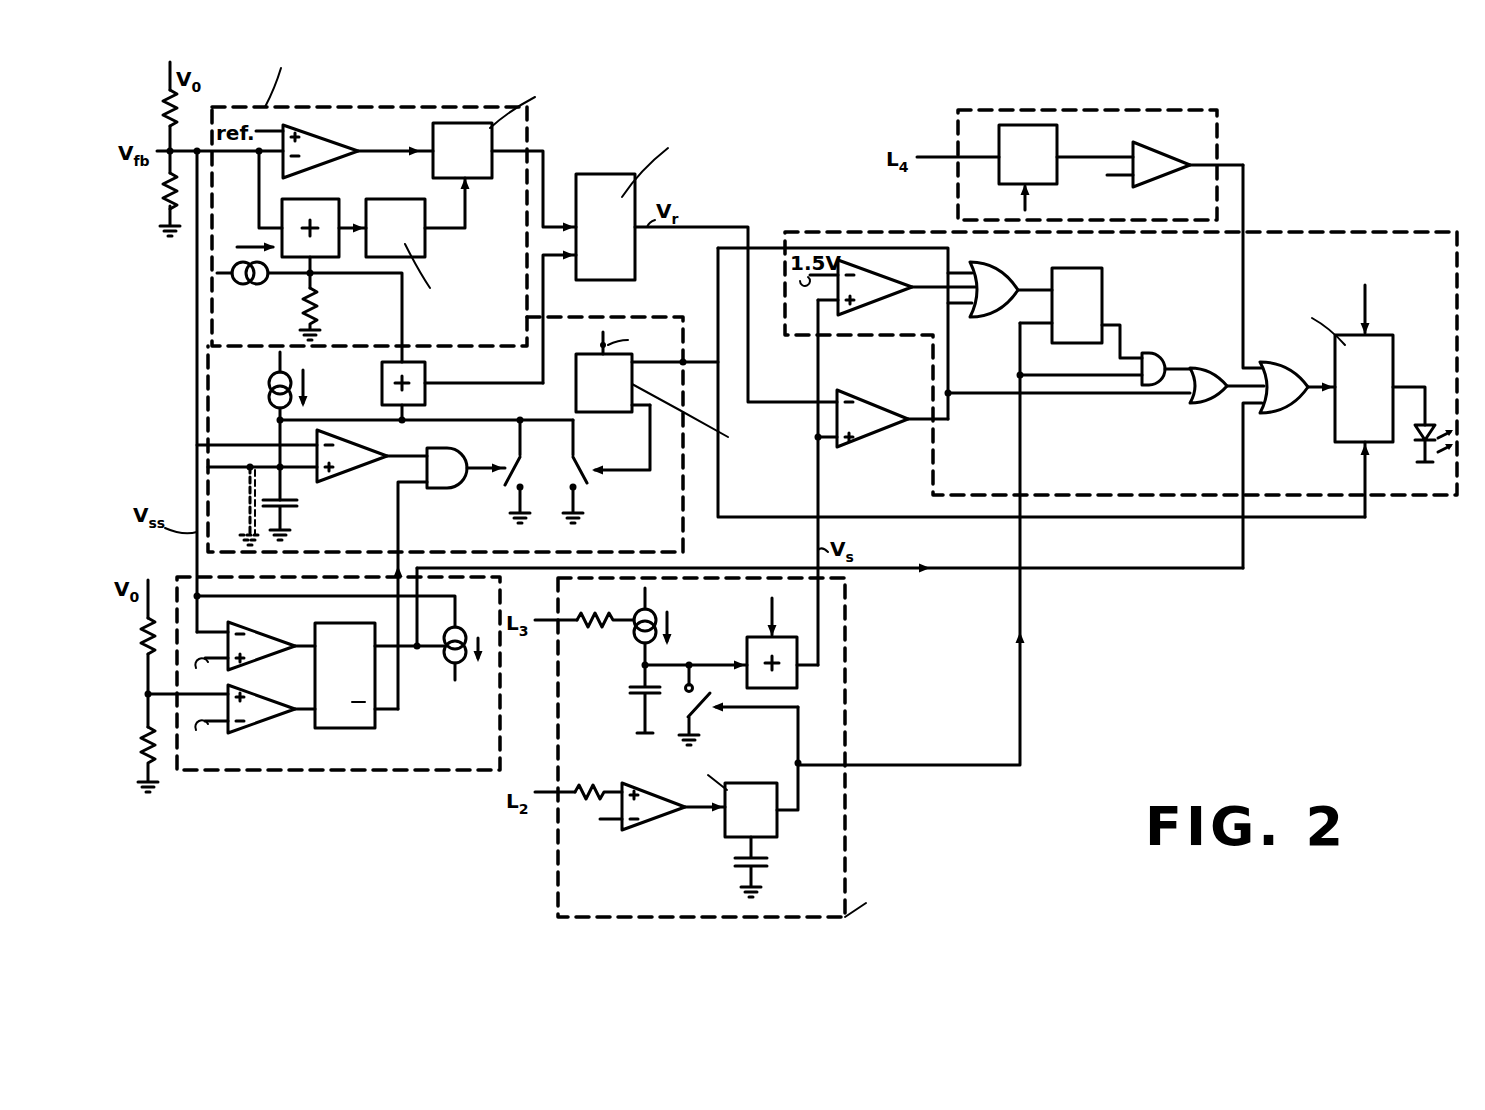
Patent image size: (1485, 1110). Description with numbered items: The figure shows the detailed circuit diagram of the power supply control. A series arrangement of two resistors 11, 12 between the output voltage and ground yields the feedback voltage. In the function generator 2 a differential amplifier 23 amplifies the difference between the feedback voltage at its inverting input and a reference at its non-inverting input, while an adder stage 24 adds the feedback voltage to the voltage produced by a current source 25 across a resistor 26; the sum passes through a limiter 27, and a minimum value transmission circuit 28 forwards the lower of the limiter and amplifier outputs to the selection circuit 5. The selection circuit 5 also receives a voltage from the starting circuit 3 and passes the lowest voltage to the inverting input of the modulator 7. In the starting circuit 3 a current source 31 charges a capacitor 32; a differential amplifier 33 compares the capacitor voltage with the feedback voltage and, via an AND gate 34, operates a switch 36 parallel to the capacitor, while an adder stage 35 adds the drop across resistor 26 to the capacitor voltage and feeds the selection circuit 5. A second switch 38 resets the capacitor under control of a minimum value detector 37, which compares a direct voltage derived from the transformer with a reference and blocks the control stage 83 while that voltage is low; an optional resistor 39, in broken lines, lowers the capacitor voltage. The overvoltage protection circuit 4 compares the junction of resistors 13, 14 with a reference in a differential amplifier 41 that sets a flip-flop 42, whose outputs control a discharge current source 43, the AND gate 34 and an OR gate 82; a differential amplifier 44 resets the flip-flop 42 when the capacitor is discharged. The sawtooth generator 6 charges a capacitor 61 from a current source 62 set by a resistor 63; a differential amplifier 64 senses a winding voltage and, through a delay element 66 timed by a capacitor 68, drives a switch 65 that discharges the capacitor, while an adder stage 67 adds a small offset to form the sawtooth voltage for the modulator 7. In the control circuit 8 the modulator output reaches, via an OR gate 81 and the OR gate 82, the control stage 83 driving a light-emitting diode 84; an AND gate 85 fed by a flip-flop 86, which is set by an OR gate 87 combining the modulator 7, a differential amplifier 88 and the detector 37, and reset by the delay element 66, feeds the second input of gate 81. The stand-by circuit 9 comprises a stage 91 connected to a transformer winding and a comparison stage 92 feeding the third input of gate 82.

The function generator 2 is at (383, 104).
The starting circuit 3 is at (625, 317).
The overvoltage protection circuit 4 is at (375, 772).
The selection circuit 5 is at (590, 176).
The sawtooth generator 6 is at (847, 848).
The modulator 7 is at (869, 442).
The control circuit 8 is at (808, 232).
The stand-by circuit 9 is at (1140, 111).
The resistor 11 is at (163, 116).
The resistor 12 is at (163, 191).
The resistor 13 is at (146, 638).
The resistor 14 is at (146, 748).
The differential amplifier 23 is at (332, 143).
The adder stage 24 is at (314, 199).
The current source 25 is at (309, 312).
The resistor 26 is at (318, 310).
The limiter 27 is at (380, 199).
The minimum value transmission circuit 28 is at (496, 178).
The current source 31 is at (268, 404).
The capacitor 32 is at (290, 508).
The differential amplifier 33 is at (358, 478).
The AND gate 34 is at (452, 490).
The adder stage 35 is at (382, 384).
The switch 36 is at (520, 473).
The minimum value detector 37 is at (600, 412).
The switch 38 is at (580, 490).
The resistor 39 is at (246, 504).
The differential amplifier 41 is at (252, 726).
The flip-flop 42 is at (345, 728).
The discharge current source 43 is at (452, 627).
The differential amplifier 44 is at (264, 638).
The capacitor 61 is at (630, 692).
The current source 62 is at (636, 636).
The resistor 63 is at (599, 638).
The differential amplifier 64 is at (656, 826).
The switch 65 is at (682, 704).
The delay element 66 is at (762, 779).
The adder stage 67 is at (797, 676).
The capacitor 68 is at (735, 862).
The OR gate 81 is at (1199, 404).
The OR gate 82 is at (1284, 409).
The control stage 83 is at (1395, 359).
The light-emitting diode 84 is at (1417, 448).
The AND gate 85 is at (1158, 342).
The flip-flop 86 is at (1102, 290).
The OR gate 87 is at (1006, 262).
The differential amplifier 88 is at (880, 304).
The stage 91 is at (1057, 138).
The comparison stage 92 is at (1160, 150).